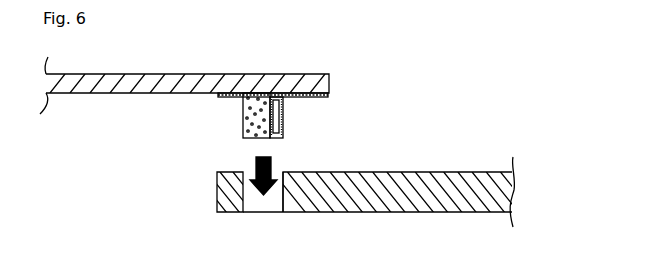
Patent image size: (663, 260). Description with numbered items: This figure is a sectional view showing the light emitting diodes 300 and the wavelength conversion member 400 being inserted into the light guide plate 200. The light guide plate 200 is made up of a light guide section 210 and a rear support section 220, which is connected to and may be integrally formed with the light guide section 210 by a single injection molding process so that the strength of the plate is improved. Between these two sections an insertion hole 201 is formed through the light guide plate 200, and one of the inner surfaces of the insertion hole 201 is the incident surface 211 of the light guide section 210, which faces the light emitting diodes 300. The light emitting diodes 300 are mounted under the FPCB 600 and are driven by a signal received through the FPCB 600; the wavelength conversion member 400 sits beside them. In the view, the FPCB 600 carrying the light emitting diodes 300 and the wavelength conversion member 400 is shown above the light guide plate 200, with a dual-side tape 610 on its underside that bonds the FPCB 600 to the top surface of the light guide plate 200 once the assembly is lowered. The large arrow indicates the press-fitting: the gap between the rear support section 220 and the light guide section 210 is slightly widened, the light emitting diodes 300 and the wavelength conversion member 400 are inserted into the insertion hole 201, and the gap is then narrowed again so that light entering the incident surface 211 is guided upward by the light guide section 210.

The FPCB 600 is at (272, 82).
The dual-side tape 610 is at (228, 93).
The light emitting diode 300 is at (243, 116).
The wavelength conversion member 400 is at (313, 119).
The light guide plate 200 is at (335, 207).
The rear support section 220 is at (227, 205).
The insertion hole 201 is at (261, 206).
The incident surface 211 is at (277, 195).
The light guide section 210 is at (425, 211).